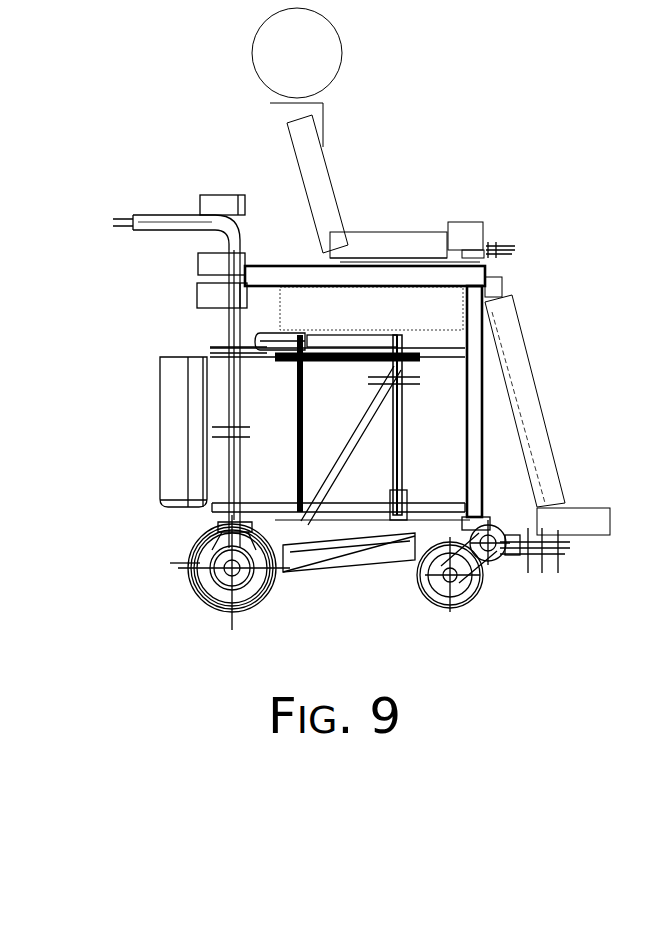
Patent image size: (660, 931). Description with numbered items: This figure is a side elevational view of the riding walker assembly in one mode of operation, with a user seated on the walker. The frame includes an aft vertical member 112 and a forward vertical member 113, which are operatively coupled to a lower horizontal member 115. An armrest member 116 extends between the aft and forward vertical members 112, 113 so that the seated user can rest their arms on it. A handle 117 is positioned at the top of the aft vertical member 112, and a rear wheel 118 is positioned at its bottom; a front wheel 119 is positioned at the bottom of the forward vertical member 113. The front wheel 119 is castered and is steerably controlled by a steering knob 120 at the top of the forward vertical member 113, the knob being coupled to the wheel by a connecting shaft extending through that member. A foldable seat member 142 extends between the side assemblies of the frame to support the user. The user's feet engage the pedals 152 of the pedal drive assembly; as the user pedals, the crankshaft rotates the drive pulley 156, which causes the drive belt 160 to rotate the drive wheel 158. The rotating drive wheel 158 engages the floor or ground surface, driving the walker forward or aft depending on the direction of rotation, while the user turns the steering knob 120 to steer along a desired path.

The aft vertical member 112 is at (228, 337).
The forward vertical member 113 is at (483, 423).
The lower horizontal member 115 is at (277, 503).
The armrest member 116 is at (362, 262).
The handle 117 is at (165, 220).
The rear wheel 118 is at (222, 605).
The front wheel 119 is at (468, 607).
The steering knob 120 is at (493, 248).
The foldable seat member 142 is at (267, 333).
The pedal 152 is at (558, 553).
The drive pulley 156 is at (500, 557).
The drive wheel 158 is at (205, 552).
The drive belt 160 is at (343, 570).